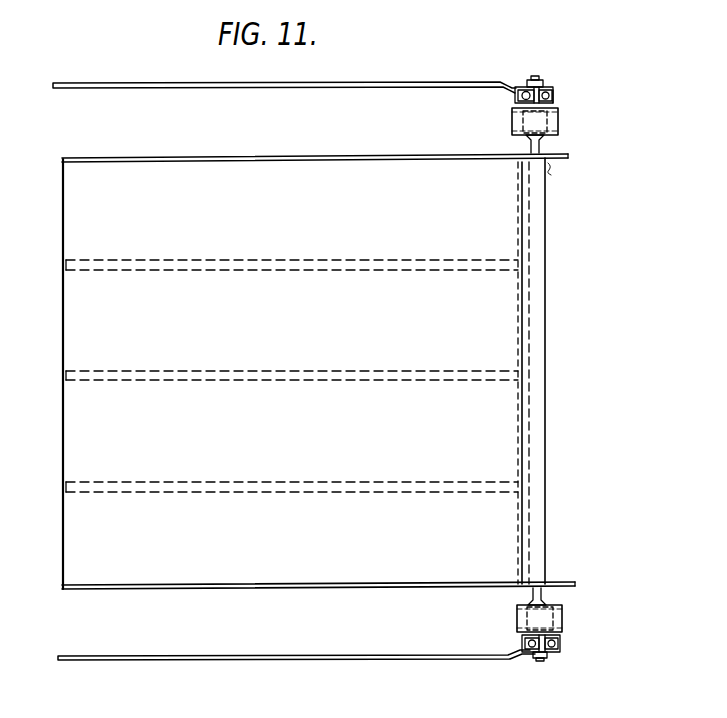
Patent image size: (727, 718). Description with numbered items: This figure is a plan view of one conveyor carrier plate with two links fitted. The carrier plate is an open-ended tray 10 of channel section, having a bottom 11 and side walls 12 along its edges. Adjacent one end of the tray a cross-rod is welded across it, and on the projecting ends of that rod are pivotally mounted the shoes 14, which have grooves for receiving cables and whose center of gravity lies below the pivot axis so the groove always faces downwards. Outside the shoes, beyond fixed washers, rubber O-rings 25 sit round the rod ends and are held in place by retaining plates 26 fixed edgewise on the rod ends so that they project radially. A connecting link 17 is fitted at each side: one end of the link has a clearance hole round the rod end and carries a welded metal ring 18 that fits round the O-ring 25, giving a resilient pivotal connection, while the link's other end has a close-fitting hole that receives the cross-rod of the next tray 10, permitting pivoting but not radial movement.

The tray 10 is at (552, 308).
The bottom 11 is at (415, 425).
The side walls 12 is at (407, 158).
The shoes 14 is at (558, 127).
The connecting link 17 is at (416, 82).
The metal ring 18 is at (553, 93).
The rubber O-rings 25 is at (556, 98).
The retaining plates 26 is at (538, 80).